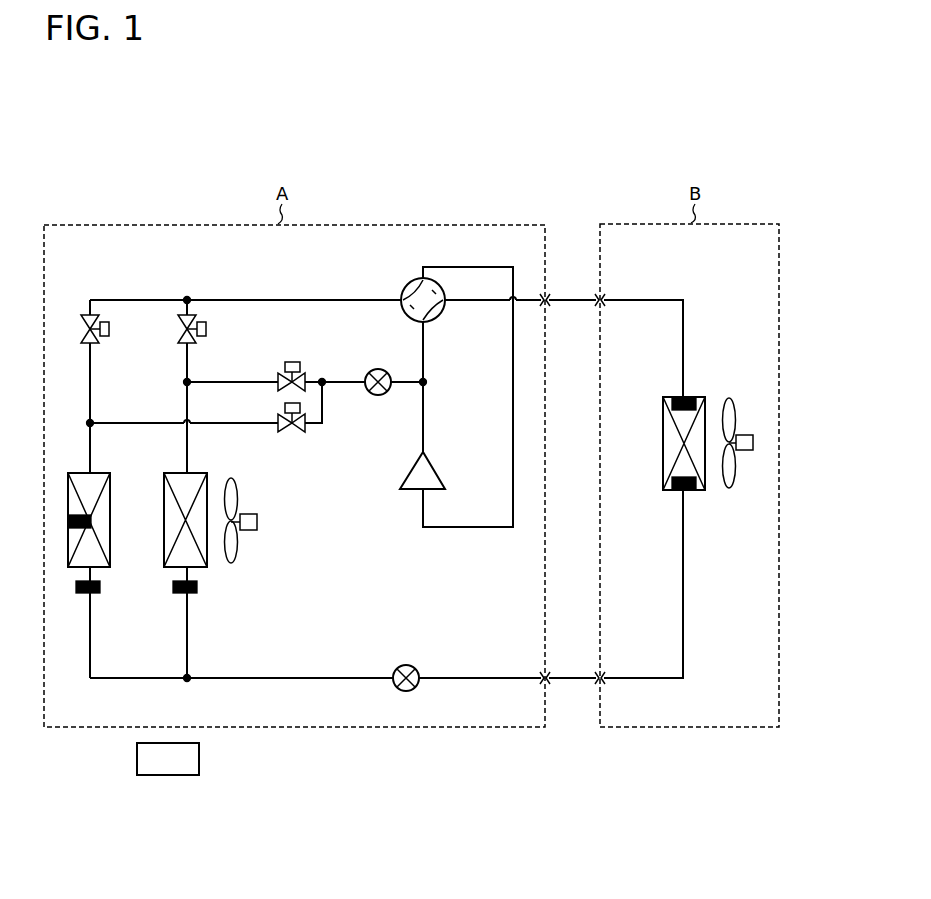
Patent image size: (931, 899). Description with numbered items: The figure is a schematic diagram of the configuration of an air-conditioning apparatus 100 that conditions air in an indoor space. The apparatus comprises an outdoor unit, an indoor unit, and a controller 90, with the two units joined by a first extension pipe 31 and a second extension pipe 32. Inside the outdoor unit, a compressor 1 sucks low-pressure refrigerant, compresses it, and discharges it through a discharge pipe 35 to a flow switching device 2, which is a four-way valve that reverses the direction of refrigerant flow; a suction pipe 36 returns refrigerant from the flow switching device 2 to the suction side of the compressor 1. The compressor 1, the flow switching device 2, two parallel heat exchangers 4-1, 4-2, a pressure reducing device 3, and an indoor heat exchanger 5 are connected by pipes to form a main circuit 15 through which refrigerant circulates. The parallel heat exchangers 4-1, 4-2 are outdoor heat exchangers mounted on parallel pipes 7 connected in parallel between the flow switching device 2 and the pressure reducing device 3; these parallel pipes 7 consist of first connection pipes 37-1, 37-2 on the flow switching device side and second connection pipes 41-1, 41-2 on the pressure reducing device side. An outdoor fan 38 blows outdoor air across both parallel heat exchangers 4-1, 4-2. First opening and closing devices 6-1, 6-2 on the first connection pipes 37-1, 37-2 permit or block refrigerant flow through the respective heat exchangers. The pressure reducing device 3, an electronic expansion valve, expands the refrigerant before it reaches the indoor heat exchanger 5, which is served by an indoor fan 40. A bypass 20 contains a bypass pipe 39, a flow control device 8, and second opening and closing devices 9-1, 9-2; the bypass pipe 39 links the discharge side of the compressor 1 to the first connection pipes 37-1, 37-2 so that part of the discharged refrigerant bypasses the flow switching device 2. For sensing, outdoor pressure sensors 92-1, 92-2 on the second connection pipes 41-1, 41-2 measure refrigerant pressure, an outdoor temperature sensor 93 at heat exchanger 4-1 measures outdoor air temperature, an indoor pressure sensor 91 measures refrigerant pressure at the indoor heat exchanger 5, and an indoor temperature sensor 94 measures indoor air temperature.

The air-conditioning apparatus 100 is at (532, 214).
The compressor 1 is at (441, 471).
The flow switching device 2 is at (408, 283).
The pressure reducing device 3 is at (403, 664).
The parallel heat exchanger 4-1 is at (108, 568).
The parallel heat exchanger 4-2 is at (205, 568).
The indoor heat exchanger 5 is at (660, 445).
The first opening and closing device 6-1 is at (103, 340).
The first opening and closing device 6-2 is at (200, 340).
The parallel pipes 7 is at (263, 641).
The flow control device 8 is at (375, 369).
The second opening and closing device 9-1 is at (292, 433).
The second opening and closing device 9-2 is at (292, 361).
The main circuit 15 is at (326, 282).
The bypass 20 is at (346, 419).
The first extension pipe 31 is at (571, 298).
The second extension pipe 32 is at (571, 684).
The discharge pipe 35 is at (424, 347).
The suction pipe 36 is at (478, 530).
The first connection pipe 37-1 is at (92, 452).
The first connection pipe 37-2 is at (189, 452).
The outdoor fan 38 is at (257, 522).
The bypass pipe 39 is at (340, 375).
The indoor fan 40 is at (732, 490).
The second connection pipe 41-1 is at (91, 655).
The second connection pipe 41-2 is at (188, 655).
The controller 90 is at (199, 758).
The indoor pressure sensor 91 is at (685, 392).
The outdoor pressure sensor 92-1 is at (93, 594).
The outdoor pressure sensor 92-2 is at (190, 594).
The outdoor temperature sensor 93 is at (92, 522).
The indoor temperature sensor 94 is at (690, 495).